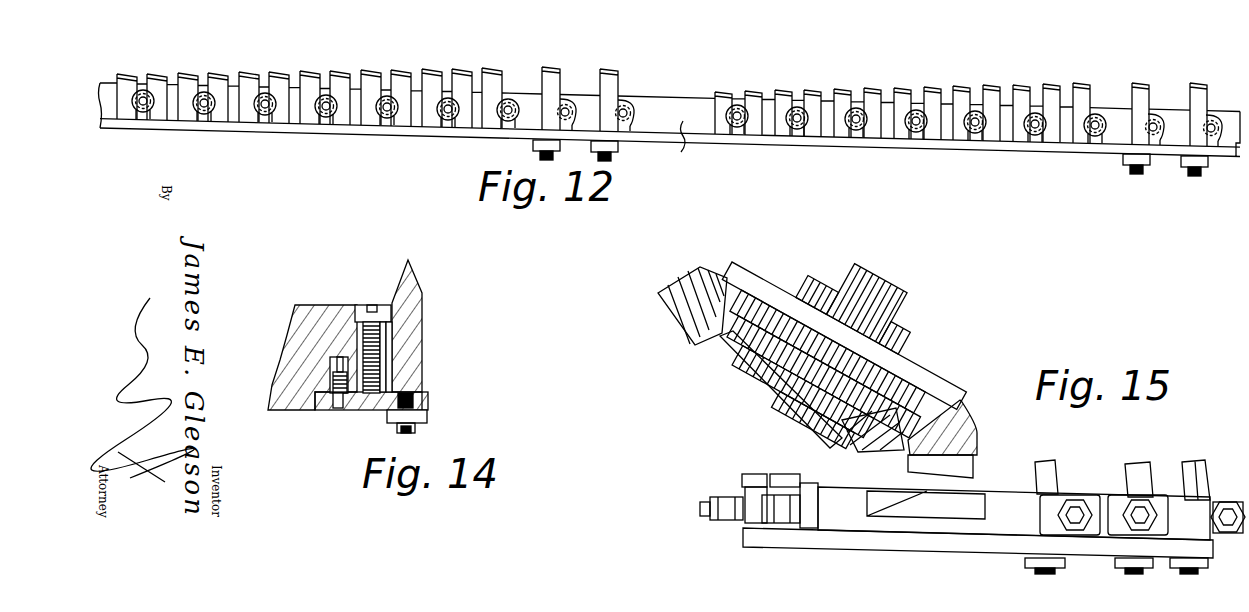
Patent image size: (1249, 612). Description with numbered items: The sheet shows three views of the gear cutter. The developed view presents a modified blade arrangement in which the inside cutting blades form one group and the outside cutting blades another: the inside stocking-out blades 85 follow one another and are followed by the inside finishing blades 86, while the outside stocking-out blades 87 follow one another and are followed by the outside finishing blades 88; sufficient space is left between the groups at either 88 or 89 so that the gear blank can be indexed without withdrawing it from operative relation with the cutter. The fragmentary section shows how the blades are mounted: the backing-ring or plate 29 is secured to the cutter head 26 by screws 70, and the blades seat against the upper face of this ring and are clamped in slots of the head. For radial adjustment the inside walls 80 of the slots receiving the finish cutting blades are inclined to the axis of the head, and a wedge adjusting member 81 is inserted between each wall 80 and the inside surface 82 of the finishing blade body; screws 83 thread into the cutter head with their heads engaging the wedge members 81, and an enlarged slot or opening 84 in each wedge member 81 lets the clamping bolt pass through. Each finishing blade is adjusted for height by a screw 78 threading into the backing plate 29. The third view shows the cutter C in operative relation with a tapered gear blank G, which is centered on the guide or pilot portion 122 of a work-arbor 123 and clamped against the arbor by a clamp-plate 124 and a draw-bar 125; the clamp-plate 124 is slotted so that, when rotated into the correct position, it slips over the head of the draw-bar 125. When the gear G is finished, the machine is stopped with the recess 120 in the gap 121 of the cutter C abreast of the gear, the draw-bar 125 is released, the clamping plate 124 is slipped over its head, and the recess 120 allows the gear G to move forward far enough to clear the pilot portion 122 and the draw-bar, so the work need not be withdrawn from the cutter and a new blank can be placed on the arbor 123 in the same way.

In FIG. 12, the inside stocking-out blades 85 is at (315, 86).
In FIG. 12, the inside finishing blades 86 is at (583, 102).
In FIG. 14, the inside finishing blades 86 is at (427, 417).
In FIG. 12, the outside stocking-out blades 87 is at (908, 101).
In FIG. 12, the outside finishing blades 88 is at (680, 125).
In FIG. 12, the space between groups of blades 89 is at (1226, 140).
In FIG. 14, the cutter head 26 is at (290, 405).
In FIG. 14, the screws 70 is at (338, 410).
In FIG. 14, the backing-ring or plate 29 is at (370, 405).
In FIG. 14, the screws 83 is at (365, 306).
In FIG. 14, the wedge adjusting member 81 is at (388, 320).
In FIG. 14, the inside surfaces of the finishing blade body portions 82 is at (395, 341).
In FIG. 14, the inside walls of the slots 80 is at (385, 348).
In FIG. 14, the enlarged slot or opening 84 is at (392, 362).
In FIG. 14, the screws 78 is at (407, 432).
In FIG. 15, the gear blank G is at (690, 330).
In FIG. 15, the work-arbor 123 is at (947, 390).
In FIG. 15, the guide or pilot portion 122 is at (742, 365).
In FIG. 15, the clamp-plate 124 is at (757, 376).
In FIG. 15, the draw-bar 125 is at (893, 290).
In FIG. 15, the recess 120 is at (962, 502).
In FIG. 15, the gap 121 is at (1007, 528).
In FIG. 15, the cutter C is at (1083, 493).